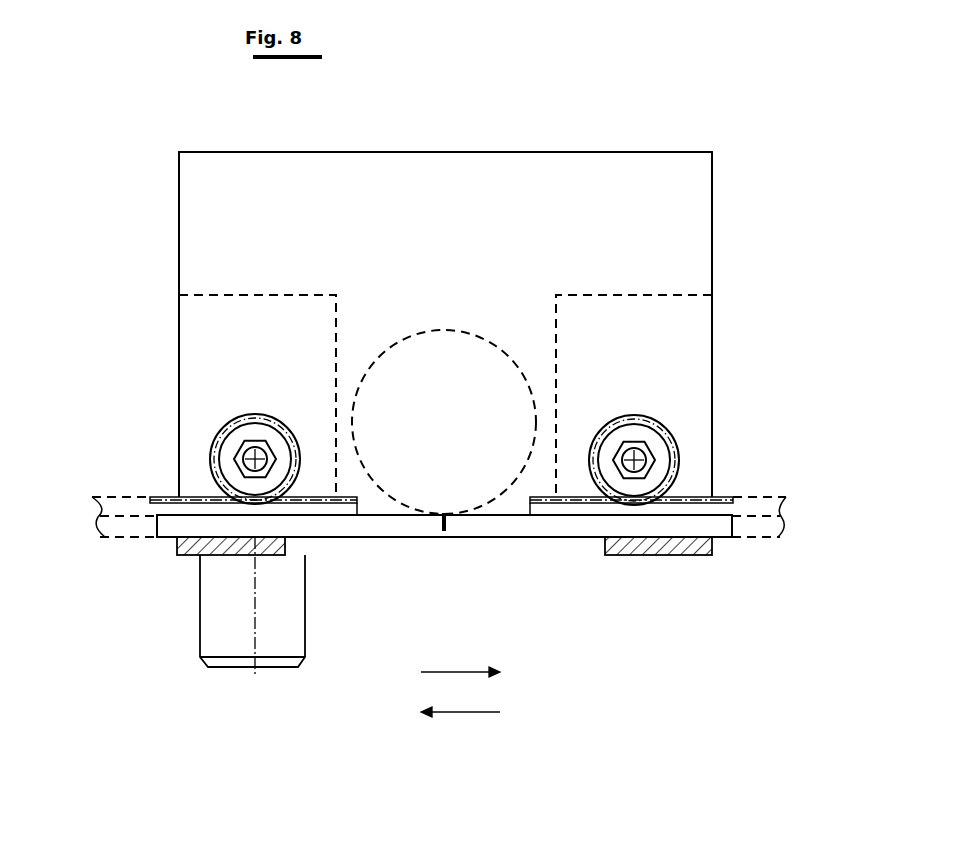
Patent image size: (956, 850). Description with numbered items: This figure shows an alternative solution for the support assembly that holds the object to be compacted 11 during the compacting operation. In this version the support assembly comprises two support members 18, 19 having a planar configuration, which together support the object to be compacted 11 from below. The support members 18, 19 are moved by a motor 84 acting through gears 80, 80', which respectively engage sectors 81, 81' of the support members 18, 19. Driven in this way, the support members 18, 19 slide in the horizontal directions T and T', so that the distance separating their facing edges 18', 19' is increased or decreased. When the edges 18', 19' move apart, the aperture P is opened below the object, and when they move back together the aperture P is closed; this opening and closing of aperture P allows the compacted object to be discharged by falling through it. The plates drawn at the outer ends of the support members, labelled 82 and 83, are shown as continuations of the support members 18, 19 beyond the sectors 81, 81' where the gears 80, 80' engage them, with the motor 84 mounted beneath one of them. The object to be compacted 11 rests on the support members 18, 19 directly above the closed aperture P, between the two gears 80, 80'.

The object to be compacted 11 is at (463, 330).
The gear 80 is at (255, 429).
The gear 80' is at (634, 430).
The sector 81 is at (236, 468).
The sector 81' is at (650, 480).
The support plate extension 82 is at (118, 527).
The support plate extension 83 is at (757, 540).
The motor 84 is at (222, 645).
The support member 18 is at (300, 550).
The support member 19 is at (588, 550).
The edge 18' is at (426, 549).
The edge 19' is at (463, 549).
The aperture P is at (432, 513).
The horizontal direction T is at (460, 656).
The horizontal direction T' is at (460, 733).